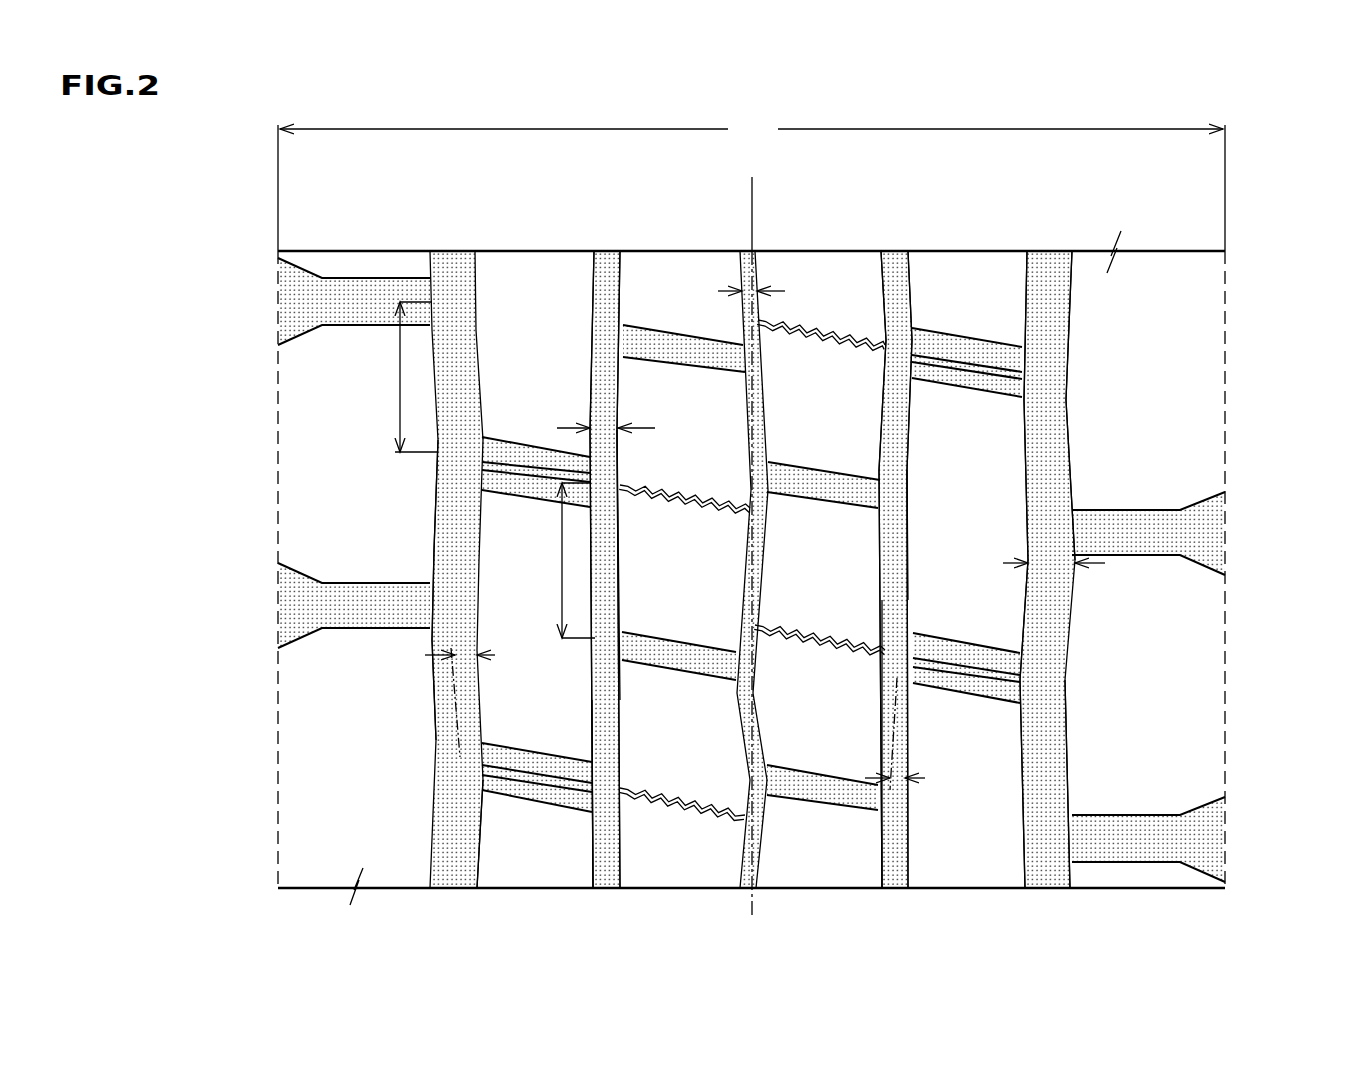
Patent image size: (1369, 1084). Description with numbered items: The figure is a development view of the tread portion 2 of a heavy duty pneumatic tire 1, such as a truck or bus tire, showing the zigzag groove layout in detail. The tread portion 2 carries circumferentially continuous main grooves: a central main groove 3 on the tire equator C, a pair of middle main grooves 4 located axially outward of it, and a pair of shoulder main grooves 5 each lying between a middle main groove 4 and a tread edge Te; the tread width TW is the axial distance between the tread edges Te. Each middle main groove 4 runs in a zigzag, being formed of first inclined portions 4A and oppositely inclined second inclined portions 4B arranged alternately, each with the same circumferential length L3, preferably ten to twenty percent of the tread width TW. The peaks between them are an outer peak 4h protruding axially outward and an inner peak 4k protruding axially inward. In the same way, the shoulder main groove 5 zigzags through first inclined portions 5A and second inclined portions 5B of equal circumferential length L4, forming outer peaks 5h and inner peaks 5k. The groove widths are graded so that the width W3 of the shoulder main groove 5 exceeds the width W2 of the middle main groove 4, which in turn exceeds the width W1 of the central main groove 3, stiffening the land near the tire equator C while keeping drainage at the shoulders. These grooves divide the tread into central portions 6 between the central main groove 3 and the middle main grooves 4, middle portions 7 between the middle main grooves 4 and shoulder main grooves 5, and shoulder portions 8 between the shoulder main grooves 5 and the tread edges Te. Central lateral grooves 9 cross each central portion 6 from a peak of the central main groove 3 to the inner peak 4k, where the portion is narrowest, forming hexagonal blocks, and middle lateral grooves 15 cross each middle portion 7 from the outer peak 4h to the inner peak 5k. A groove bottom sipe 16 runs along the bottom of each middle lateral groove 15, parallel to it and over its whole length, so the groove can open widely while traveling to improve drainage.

The heavy duty pneumatic tire 1 is at (1305, 165).
The tread portion 2 is at (1243, 205).
The central main groove 3 is at (753, 267).
The middle main groove 4 is at (603, 272).
The first inclined portion 4A is at (607, 537).
The second inclined portion 4B is at (900, 423).
The outer peak 4h is at (605, 790).
The inner peak 4k is at (897, 497).
The shoulder main groove 5 is at (450, 275).
The first inclined portion 5A is at (443, 707).
The second inclined portion 5B is at (450, 527).
The outer peak 5h is at (448, 614).
The inner peak 5k is at (457, 767).
The central portion 6 is at (695, 273).
The middle portion 7 is at (533, 275).
The shoulder portion 8 is at (352, 355).
The central lateral groove 9 is at (670, 347).
The middle lateral groove 15 is at (497, 477).
The groove bottom sipe 16 is at (520, 778).
The tread edge Te is at (1228, 300).
The tread width TW is at (751, 128).
The tire equator C is at (751, 529).
The width of central main groove W1 is at (740, 292).
The width of middle main groove W2 is at (605, 427).
The width of shoulder main groove W3 is at (1067, 570).
The circumferential length L3 is at (562, 567).
The circumferential length L4 is at (400, 382).